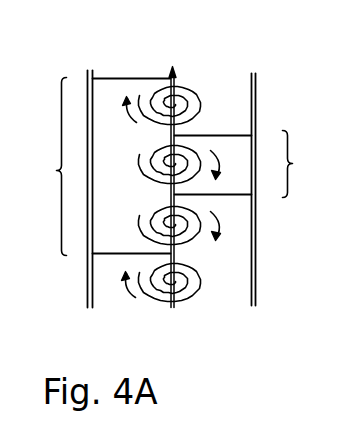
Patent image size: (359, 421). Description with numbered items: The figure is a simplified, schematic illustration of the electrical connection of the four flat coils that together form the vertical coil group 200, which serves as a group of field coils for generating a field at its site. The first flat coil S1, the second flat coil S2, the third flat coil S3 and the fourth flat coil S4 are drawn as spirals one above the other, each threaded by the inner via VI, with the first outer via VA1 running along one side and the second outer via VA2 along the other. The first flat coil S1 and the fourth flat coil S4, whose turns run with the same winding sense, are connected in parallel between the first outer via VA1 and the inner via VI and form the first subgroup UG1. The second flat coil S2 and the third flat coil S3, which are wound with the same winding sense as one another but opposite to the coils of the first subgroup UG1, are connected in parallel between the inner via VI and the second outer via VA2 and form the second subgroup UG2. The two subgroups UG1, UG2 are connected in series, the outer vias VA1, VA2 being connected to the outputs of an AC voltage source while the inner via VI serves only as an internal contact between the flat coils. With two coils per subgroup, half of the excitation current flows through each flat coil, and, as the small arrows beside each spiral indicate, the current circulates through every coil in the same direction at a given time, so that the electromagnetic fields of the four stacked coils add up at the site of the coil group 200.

The first outer via VA1 is at (85, 79).
The second outer via VA2 is at (253, 100).
The inner via VI is at (171, 66).
The first flat coil S1 is at (194, 86).
The second flat coil S2 is at (140, 156).
The third flat coil S3 is at (140, 216).
The fourth flat coil S4 is at (198, 285).
The first subgroup UG1 is at (39, 167).
The second subgroup UG2 is at (313, 164).
The coil group 200 is at (246, 325).